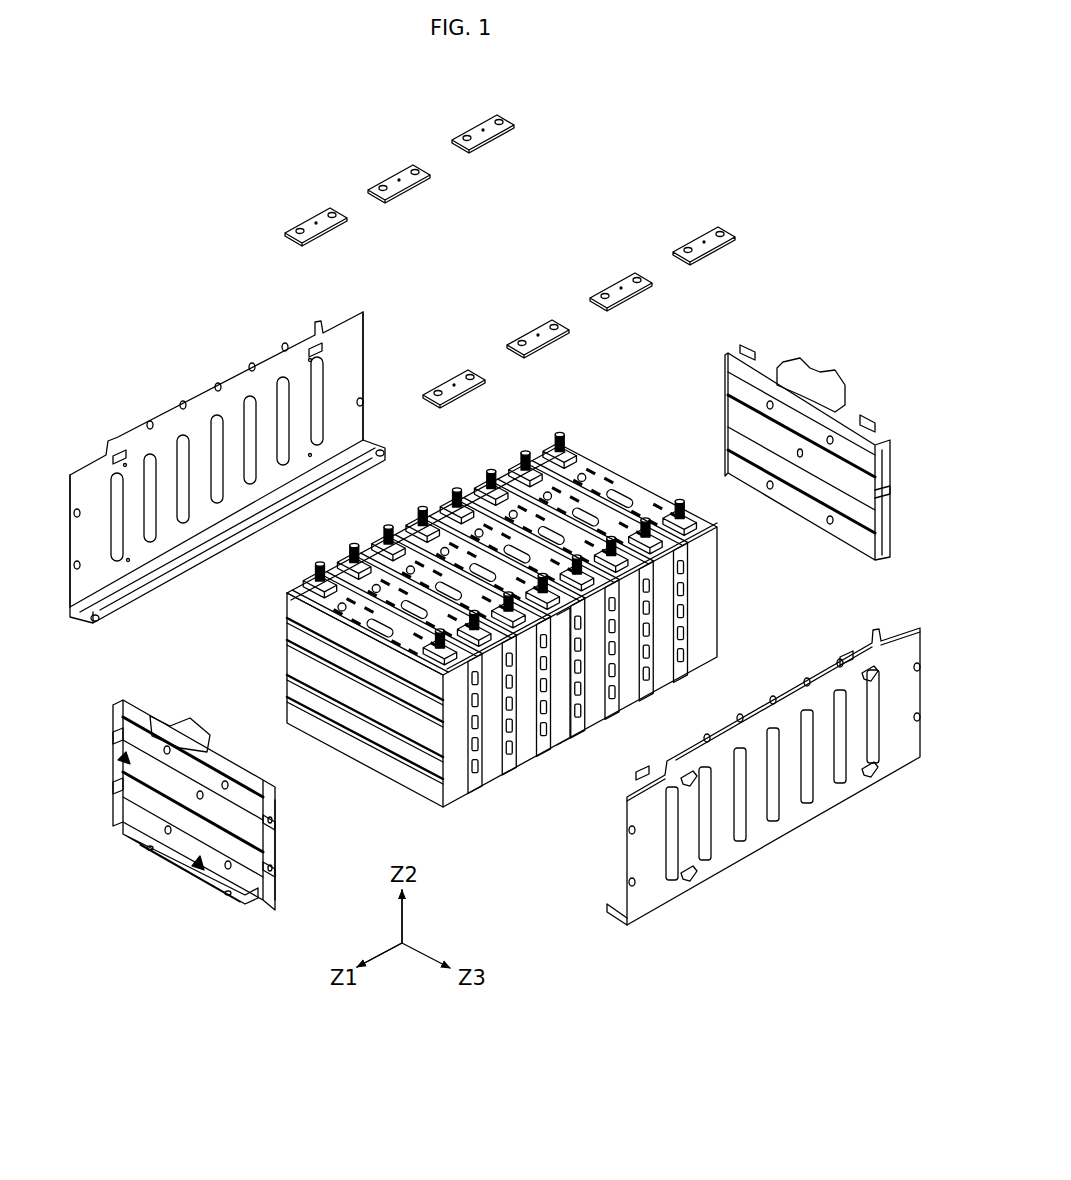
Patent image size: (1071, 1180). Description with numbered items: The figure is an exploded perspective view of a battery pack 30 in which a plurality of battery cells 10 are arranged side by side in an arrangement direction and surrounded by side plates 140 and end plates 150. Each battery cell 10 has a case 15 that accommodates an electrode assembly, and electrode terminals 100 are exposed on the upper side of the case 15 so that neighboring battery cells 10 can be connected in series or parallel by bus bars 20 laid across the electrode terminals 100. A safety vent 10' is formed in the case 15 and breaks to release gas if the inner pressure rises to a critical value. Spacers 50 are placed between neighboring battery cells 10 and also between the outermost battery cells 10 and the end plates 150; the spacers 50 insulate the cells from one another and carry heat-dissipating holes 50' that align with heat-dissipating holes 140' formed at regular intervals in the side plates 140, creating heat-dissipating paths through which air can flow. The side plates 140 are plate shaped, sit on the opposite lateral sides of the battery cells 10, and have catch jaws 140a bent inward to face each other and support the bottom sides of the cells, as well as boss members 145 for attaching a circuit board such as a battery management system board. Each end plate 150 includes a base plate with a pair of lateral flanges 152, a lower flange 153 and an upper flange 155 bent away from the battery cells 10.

The battery cell 10 is at (388, 735).
The safety vent 10' is at (612, 482).
The case 15 is at (560, 730).
The bus bar 20 is at (311, 222).
The battery pack 30 is at (450, 754).
The spacer 50 is at (497, 753).
The heat-dissipating hole 50' is at (517, 729).
The electrode terminal 100 is at (612, 650).
The side plate 140 is at (485, 649).
The heat-dissipating hole 140' is at (772, 797).
The catch jaw 140a is at (88, 628).
The boss member 145 is at (868, 780).
The end plate 150 is at (481, 639).
The lateral flange 152 is at (112, 808).
The lower flange 153 is at (172, 858).
The upper flange 155 is at (176, 735).